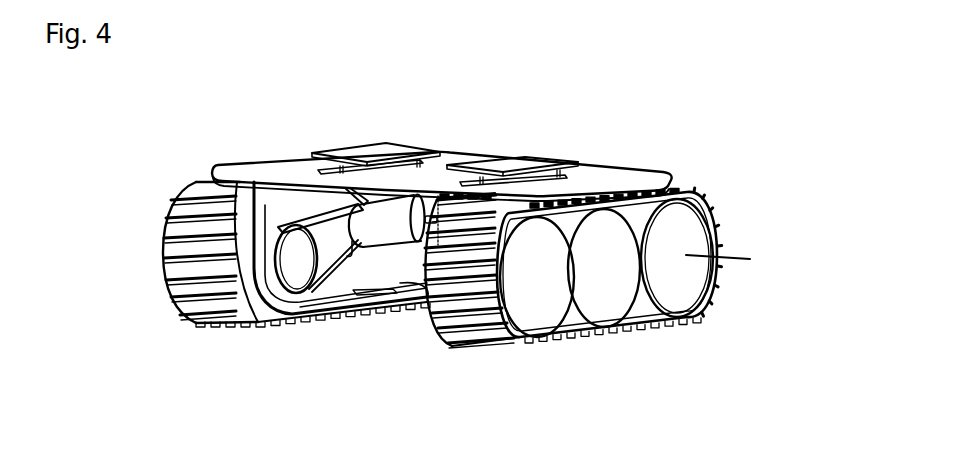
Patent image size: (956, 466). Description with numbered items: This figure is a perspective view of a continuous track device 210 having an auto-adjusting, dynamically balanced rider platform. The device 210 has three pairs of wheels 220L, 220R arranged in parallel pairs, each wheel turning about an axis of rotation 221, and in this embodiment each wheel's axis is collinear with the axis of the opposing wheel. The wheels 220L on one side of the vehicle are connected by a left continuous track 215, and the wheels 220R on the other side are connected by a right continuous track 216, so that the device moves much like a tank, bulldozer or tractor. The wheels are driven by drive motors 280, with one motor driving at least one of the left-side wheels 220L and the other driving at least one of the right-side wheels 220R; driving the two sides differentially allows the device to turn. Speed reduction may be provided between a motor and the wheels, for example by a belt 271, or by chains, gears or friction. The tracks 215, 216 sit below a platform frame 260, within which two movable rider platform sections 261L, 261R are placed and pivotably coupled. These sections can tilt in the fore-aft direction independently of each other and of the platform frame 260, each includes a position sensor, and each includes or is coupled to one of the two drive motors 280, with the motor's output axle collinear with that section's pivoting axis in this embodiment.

The device 210 is at (170, 147).
The left continuous track 215 is at (493, 350).
The right continuous track 216 is at (203, 321).
The right-side wheels 220R is at (272, 315).
The left-side wheels 220L is at (687, 318).
The axis of rotation 221 is at (735, 251).
The platform frame 260 is at (628, 176).
The right rider platform section 261R is at (362, 148).
The left rider platform section 261L is at (518, 162).
The belt 271 is at (276, 228).
The drive motor 280 is at (393, 215).